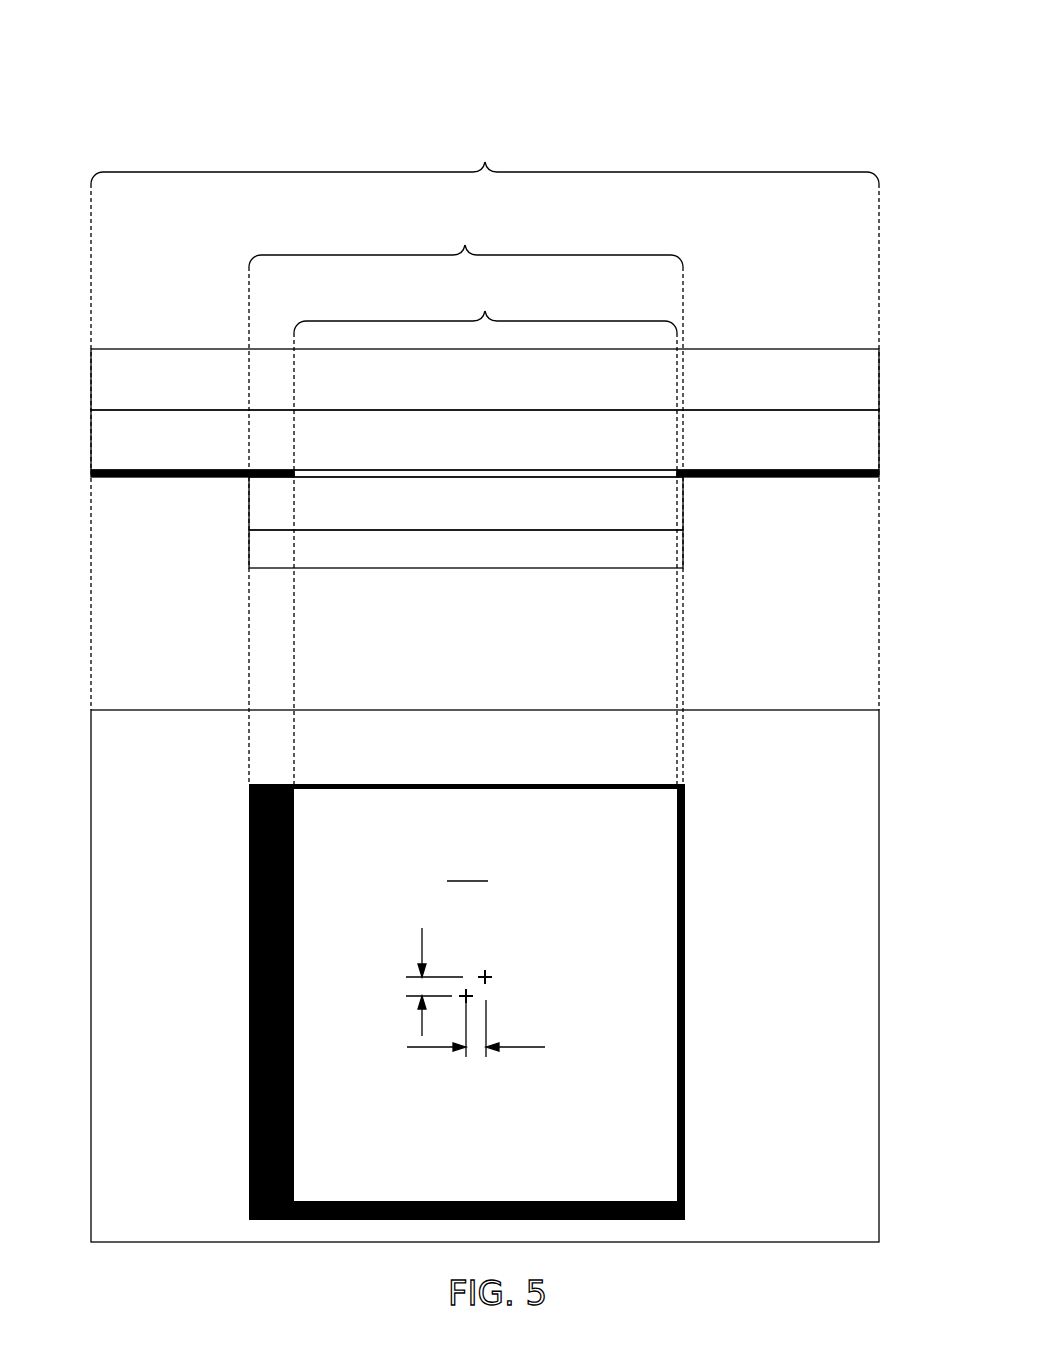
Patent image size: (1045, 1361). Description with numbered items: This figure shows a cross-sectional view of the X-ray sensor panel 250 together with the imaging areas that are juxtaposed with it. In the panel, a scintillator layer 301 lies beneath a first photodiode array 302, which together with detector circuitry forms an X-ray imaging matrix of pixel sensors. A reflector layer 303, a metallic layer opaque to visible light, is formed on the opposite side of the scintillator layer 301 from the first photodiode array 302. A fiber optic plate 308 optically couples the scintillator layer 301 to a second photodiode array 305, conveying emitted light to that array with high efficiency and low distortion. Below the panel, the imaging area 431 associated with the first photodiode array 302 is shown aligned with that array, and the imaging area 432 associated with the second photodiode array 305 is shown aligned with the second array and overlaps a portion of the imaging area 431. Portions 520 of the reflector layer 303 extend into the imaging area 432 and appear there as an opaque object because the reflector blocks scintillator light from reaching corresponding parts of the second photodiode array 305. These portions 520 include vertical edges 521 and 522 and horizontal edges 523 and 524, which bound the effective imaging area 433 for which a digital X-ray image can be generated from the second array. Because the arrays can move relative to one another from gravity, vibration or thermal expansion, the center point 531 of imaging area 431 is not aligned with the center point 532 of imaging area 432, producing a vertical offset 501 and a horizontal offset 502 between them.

The X-ray sensor panel 250 is at (121, 52).
The imaging area 431 is at (485, 162).
The imaging area 432 is at (465, 245).
The effective imaging area 433 is at (485, 311).
The first photodiode array 302 is at (879, 372).
The scintillator layer 301 is at (879, 455).
The reflector layer 303 is at (188, 478).
The fiber optic plate 308 is at (487, 512).
The second photodiode array 305 is at (487, 561).
The portions of reflector layer 520 is at (436, 1002).
The vertical edge 521 is at (298, 1068).
The vertical edge 522 is at (678, 1105).
The horizontal edge 523 is at (478, 790).
The horizontal edge 524 is at (476, 1200).
The vertical offset 501 is at (422, 942).
The horizontal offset 502 is at (527, 1047).
The center point 531 is at (487, 970).
The center point 532 is at (467, 988).